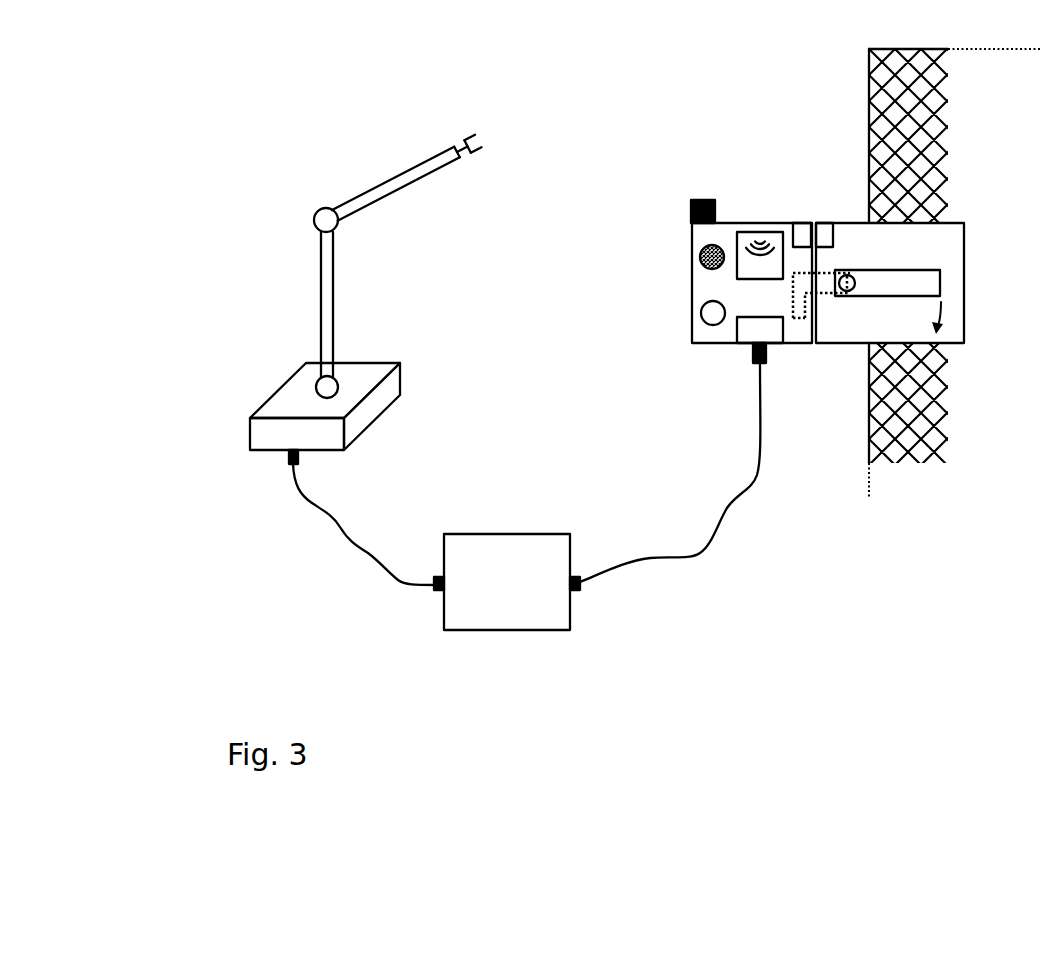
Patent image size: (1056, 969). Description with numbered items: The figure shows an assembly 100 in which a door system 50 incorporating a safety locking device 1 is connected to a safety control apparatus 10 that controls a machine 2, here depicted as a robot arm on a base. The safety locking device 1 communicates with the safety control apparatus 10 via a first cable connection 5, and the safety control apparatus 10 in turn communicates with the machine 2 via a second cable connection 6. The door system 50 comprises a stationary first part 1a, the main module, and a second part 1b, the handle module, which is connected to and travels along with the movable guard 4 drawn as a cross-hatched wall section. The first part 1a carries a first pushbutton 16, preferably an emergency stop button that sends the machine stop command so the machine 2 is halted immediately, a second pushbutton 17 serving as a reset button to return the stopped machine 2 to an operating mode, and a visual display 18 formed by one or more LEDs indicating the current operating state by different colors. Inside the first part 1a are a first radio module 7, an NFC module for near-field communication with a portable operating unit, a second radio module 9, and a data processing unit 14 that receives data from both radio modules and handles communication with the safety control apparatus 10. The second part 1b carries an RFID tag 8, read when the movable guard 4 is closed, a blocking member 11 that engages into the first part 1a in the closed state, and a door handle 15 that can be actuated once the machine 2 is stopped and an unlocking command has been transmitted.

The assembly 100 is at (800, 624).
The machine 2 is at (250, 433).
The second cable connection 6 is at (365, 550).
The safety control apparatus 10 is at (510, 629).
The first cable connection 5 is at (658, 558).
The door system 50 is at (704, 164).
The safety locking device 1 is at (825, 260).
The first part 1a is at (692, 285).
The second part 1b is at (967, 285).
The visual display 18 is at (708, 203).
The first pushbutton 16 is at (700, 252).
The second pushbutton 17 is at (701, 312).
The first radio module 7 is at (760, 235).
The data processing unit 14 is at (745, 343).
The second radio module 9 is at (800, 223).
The RFID tag 8 is at (828, 223).
The door handle 15 is at (918, 283).
The blocking member 11 is at (801, 319).
The movable guard 4 is at (869, 90).